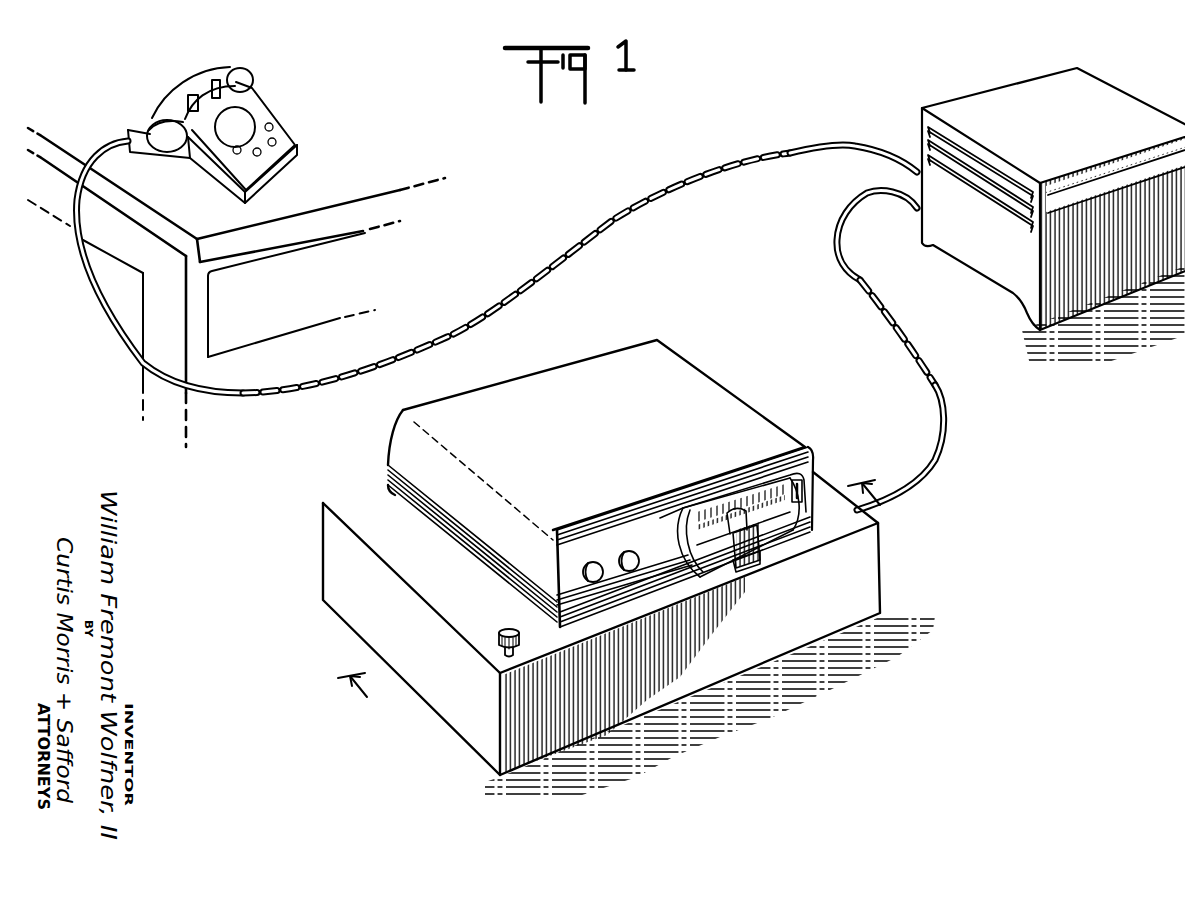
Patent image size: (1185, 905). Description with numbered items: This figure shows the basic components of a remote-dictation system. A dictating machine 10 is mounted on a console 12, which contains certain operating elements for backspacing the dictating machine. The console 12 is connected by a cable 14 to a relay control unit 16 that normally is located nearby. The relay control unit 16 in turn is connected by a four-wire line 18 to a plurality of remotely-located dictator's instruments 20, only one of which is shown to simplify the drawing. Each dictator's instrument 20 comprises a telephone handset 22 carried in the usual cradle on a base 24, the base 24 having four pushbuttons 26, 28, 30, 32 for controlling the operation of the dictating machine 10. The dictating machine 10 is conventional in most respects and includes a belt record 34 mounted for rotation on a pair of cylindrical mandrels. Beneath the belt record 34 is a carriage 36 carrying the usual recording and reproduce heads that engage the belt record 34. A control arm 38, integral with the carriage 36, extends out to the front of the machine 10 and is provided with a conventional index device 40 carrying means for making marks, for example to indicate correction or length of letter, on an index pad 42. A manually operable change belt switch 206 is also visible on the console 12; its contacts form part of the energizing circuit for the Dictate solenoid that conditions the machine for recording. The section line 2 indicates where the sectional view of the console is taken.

The dictating machine 10 is at (600, 476).
The console 12 is at (348, 501).
The cable 14 is at (842, 225).
The relay control unit 16 is at (1088, 88).
The four-wire line 18 is at (76, 259).
The dictator's instrument 20 is at (226, 120).
The telephone handset 22 is at (167, 101).
The base 24 is at (175, 163).
The pushbutton 26 is at (237, 153).
The pushbutton 28 is at (260, 154).
The pushbutton 30 is at (276, 143).
The pushbutton 32 is at (273, 128).
The belt record 34 is at (700, 505).
The carriage 36 is at (733, 564).
The control arm 38 is at (758, 562).
The index device 40 is at (737, 512).
The index pad 42 is at (708, 538).
The change belt switch 206 is at (506, 626).
The section line 2- 2 is at (599, 582).